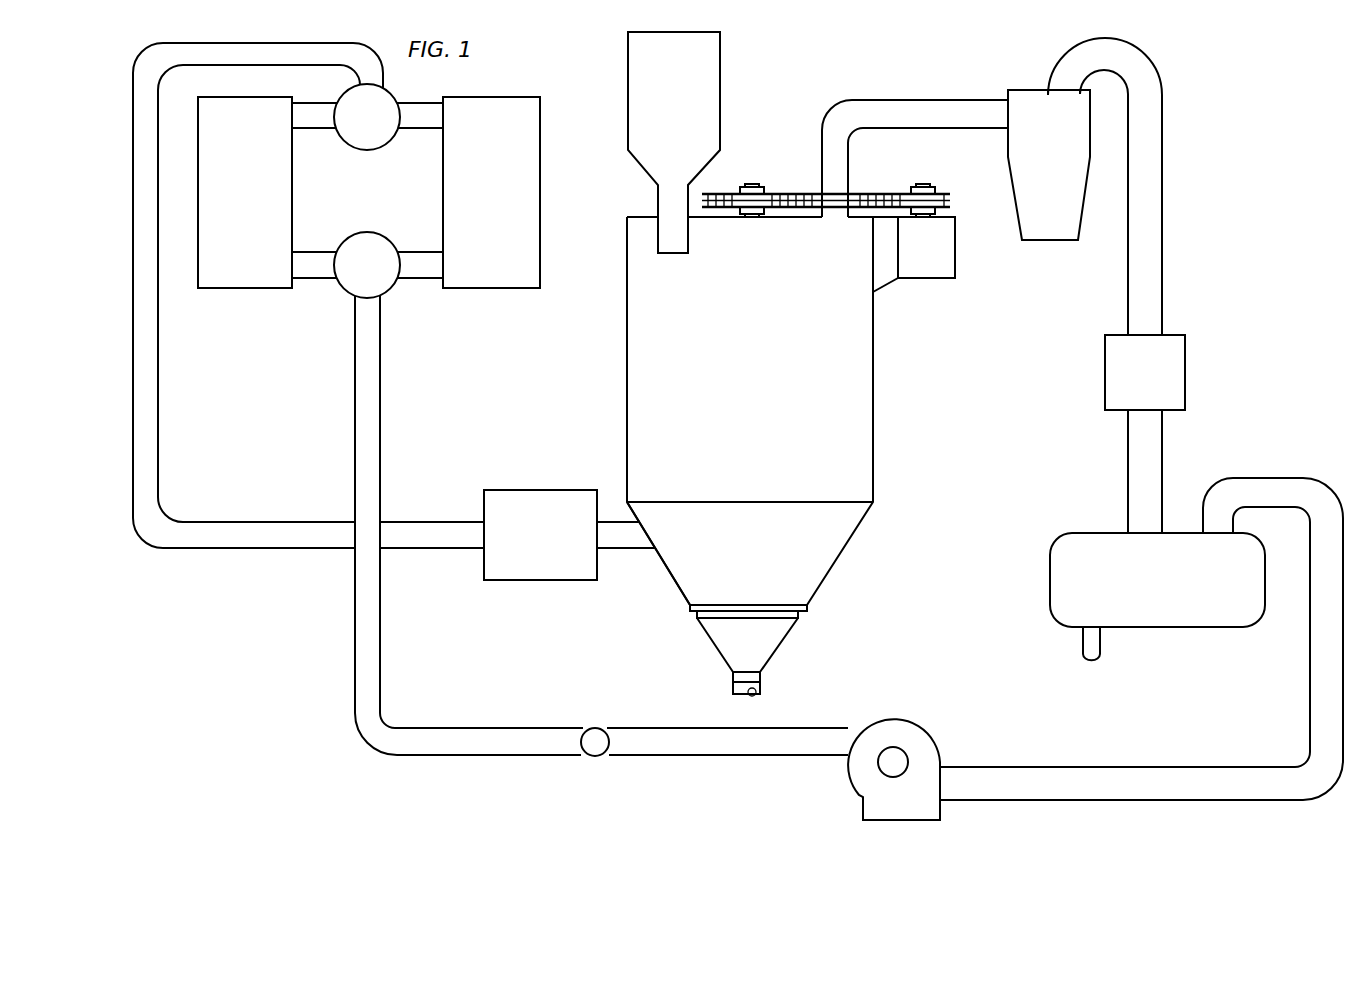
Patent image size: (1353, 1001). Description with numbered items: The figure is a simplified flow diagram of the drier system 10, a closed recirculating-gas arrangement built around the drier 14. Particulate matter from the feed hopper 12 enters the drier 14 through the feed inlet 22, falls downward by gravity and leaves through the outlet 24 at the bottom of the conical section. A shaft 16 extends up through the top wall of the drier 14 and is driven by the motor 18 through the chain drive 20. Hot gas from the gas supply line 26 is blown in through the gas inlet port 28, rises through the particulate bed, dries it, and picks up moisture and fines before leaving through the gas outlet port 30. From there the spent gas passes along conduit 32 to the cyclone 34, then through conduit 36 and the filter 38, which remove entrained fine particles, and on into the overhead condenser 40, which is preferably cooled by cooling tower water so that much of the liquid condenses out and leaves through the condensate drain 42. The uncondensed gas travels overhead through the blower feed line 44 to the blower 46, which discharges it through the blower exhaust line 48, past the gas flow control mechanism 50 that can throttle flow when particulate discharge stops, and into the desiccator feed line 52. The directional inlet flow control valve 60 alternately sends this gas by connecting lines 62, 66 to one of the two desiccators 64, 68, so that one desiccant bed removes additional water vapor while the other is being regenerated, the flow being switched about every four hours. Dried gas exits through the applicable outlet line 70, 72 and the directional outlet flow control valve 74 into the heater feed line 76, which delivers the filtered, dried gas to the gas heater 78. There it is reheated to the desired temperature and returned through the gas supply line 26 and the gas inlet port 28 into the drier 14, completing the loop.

The drier system 10 is at (1212, 152).
The feed hopper 12 is at (658, 95).
The drier 14 is at (731, 400).
The shaft 16 is at (752, 217).
The motor 18 is at (910, 253).
The chain drive 20 is at (875, 193).
The feed inlet 22 is at (677, 254).
The outlet 24 is at (733, 676).
The gas supply line 26 is at (623, 549).
The gas inlet port 28 is at (646, 531).
The gas outlet port 30 is at (836, 218).
The exhaust conduit 32 is at (850, 105).
The cyclone 34 is at (1034, 154).
The return conduit 36 is at (1165, 128).
The filter 38 is at (1131, 383).
The overhead condenser 40 is at (1136, 586).
The condensate drain 42 is at (1101, 640).
The blower feed line 44 is at (1268, 478).
The blower 46 is at (925, 731).
The blower exhaust line 48 is at (700, 756).
The gas flow control mechanism 50 is at (590, 730).
The desiccator feed line 52 is at (355, 347).
The directional inlet flow control valve 60 is at (353, 274).
The conduit 62 is at (318, 252).
The desiccator 64 is at (229, 205).
The conduit 66 is at (415, 252).
The desiccator 68 is at (477, 205).
The outlet line 70 is at (318, 129).
The outlet line 72 is at (417, 128).
The directional outlet flow control valve 74 is at (353, 126).
The heater feed line 76 is at (159, 397).
The gas heater 78 is at (524, 550).